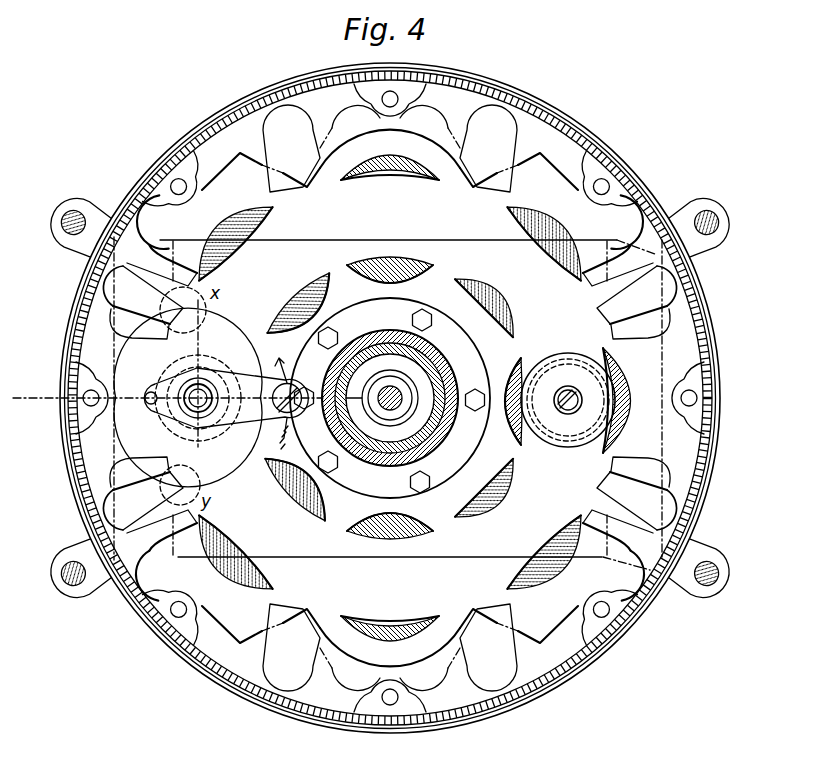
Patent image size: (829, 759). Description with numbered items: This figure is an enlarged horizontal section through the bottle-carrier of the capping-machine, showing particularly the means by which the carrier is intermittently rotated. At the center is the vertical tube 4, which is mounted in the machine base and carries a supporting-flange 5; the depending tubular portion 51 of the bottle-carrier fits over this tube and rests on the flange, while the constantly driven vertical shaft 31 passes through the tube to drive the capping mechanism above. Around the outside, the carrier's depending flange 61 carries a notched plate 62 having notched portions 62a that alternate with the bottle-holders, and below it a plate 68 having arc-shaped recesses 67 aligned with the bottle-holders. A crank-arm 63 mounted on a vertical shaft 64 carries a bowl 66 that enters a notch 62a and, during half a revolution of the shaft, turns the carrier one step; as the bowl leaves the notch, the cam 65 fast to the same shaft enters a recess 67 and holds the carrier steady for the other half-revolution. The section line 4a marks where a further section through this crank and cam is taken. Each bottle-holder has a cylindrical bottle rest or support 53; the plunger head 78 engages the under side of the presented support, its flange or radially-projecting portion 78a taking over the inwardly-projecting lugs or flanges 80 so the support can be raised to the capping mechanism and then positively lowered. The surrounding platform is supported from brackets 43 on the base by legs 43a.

The vertical tube 4 is at (420, 432).
The section line 4a is at (163, 385).
The supporting-flange 5 is at (408, 309).
The vertical shaft 31 is at (386, 414).
The bracket 43 is at (722, 240).
The leg 43a is at (709, 212).
The depending tubular portion 51 is at (448, 367).
The bottle rest or support 53 is at (566, 226).
The depending flange 61 is at (614, 185).
The notched plate 62 is at (172, 670).
The notched portion 62a is at (513, 133).
The crank-arm 63 is at (247, 371).
The vertical shaft 64 is at (199, 408).
The cam 65 is at (226, 474).
The bowl 66 is at (290, 403).
The arc-shaped recess 67 is at (335, 397).
The plate 68 is at (306, 180).
The head 78 is at (568, 408).
The flange or radially-projecting portion 78a is at (563, 354).
The inwardly-projecting lugs or flanges 80 is at (560, 260).